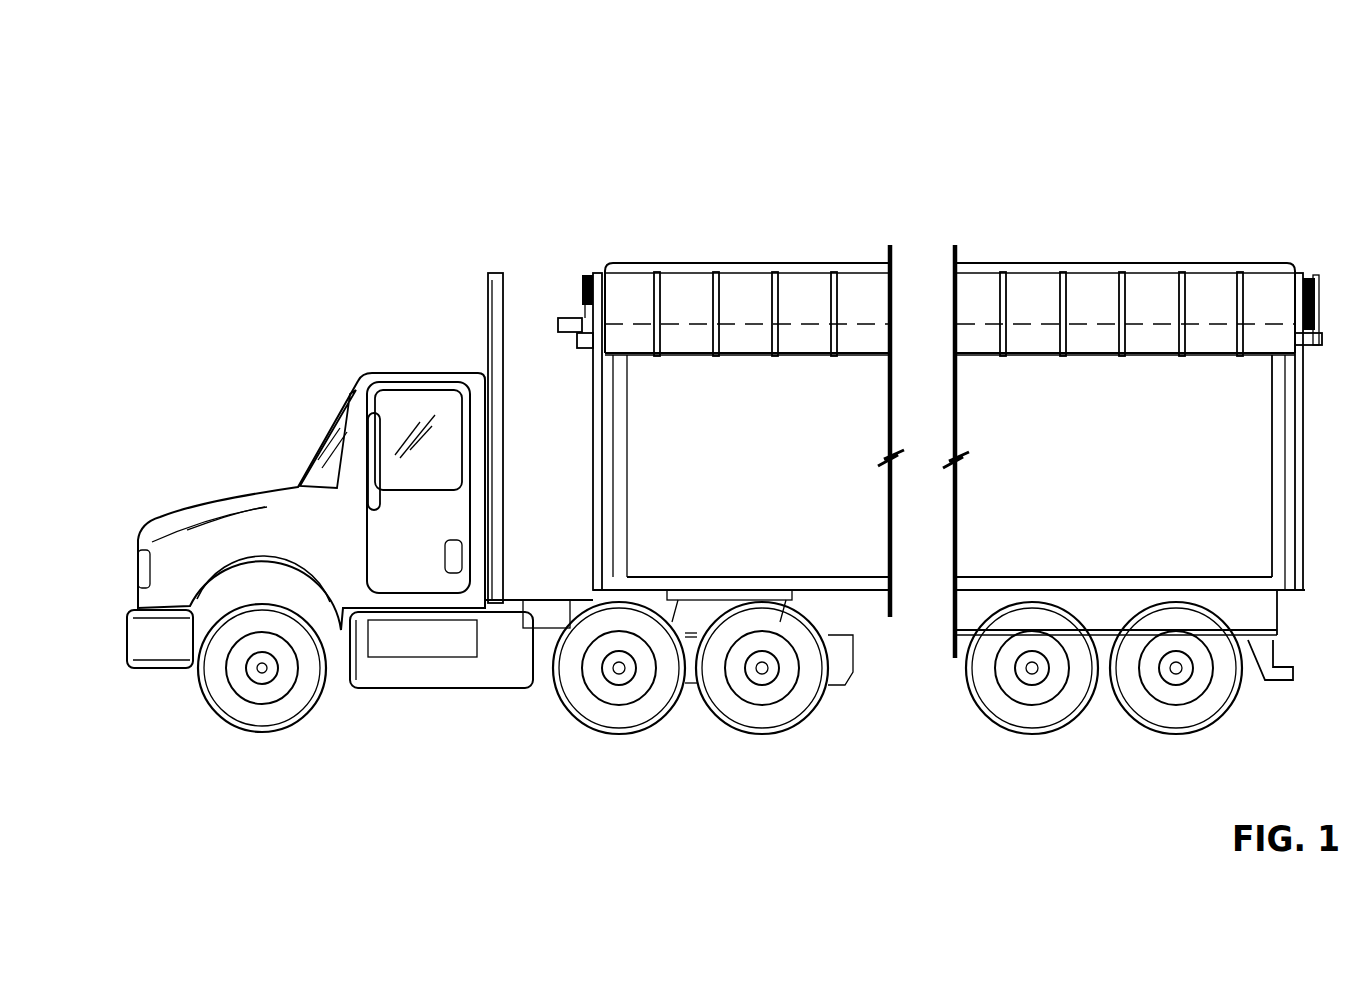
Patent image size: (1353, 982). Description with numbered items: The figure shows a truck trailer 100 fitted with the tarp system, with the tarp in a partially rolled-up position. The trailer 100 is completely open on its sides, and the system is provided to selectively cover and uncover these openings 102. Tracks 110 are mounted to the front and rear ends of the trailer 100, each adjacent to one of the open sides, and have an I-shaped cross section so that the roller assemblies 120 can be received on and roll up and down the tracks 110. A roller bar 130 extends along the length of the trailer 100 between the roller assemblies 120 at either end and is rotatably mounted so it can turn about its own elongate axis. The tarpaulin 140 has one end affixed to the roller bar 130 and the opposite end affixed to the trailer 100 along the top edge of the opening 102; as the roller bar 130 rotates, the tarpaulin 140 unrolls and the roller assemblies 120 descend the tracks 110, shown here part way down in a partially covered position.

The truck trailer 100 is at (1193, 153).
The opening 102 is at (1085, 400).
The track 110 is at (590, 543).
The roller assembly 120 is at (594, 311).
The roller bar 130 is at (810, 340).
The tarpaulin 140 is at (635, 288).